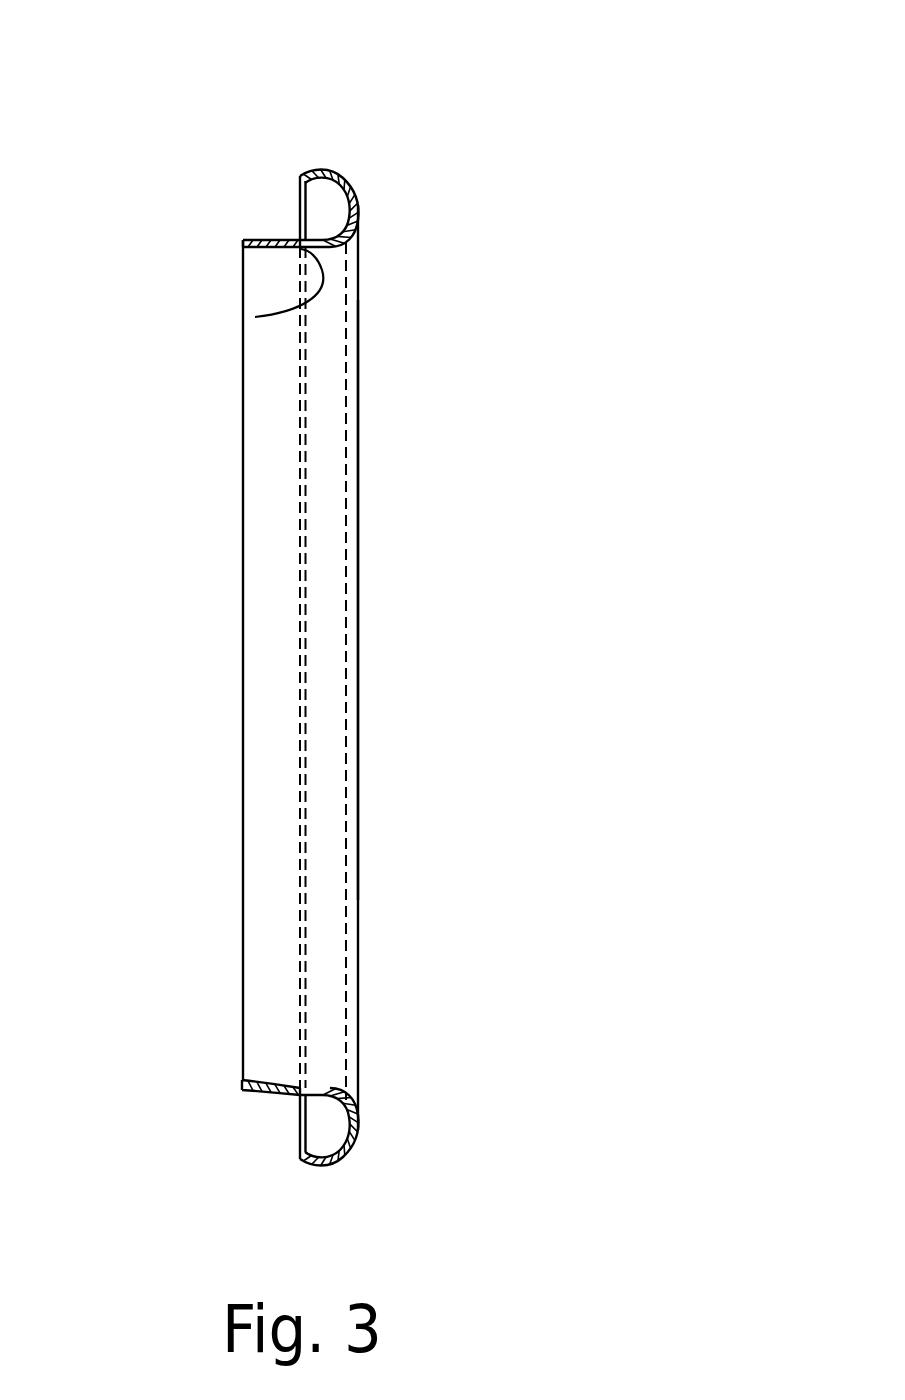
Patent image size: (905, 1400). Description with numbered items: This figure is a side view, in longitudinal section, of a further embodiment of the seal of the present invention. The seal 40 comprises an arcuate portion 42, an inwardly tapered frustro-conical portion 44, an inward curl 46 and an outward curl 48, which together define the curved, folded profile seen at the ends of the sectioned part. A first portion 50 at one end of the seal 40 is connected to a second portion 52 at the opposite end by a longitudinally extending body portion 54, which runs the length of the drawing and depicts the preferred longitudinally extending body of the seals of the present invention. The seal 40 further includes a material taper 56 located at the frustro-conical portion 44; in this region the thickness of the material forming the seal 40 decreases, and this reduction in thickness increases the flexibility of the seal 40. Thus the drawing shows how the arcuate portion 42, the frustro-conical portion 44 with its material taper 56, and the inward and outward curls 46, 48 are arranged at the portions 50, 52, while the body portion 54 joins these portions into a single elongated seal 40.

The seal 40 is at (406, 675).
The arcuate portion 42 is at (358, 198).
The inwardly tapered frustro-conical portion 44 is at (255, 317).
The inward curl 46 is at (302, 176).
The outward curl 48 is at (243, 242).
The first portion 50 is at (342, 172).
The second portion 52 is at (360, 1135).
The longitudinally extending body portion 54 is at (332, 532).
The material taper 56 is at (272, 240).